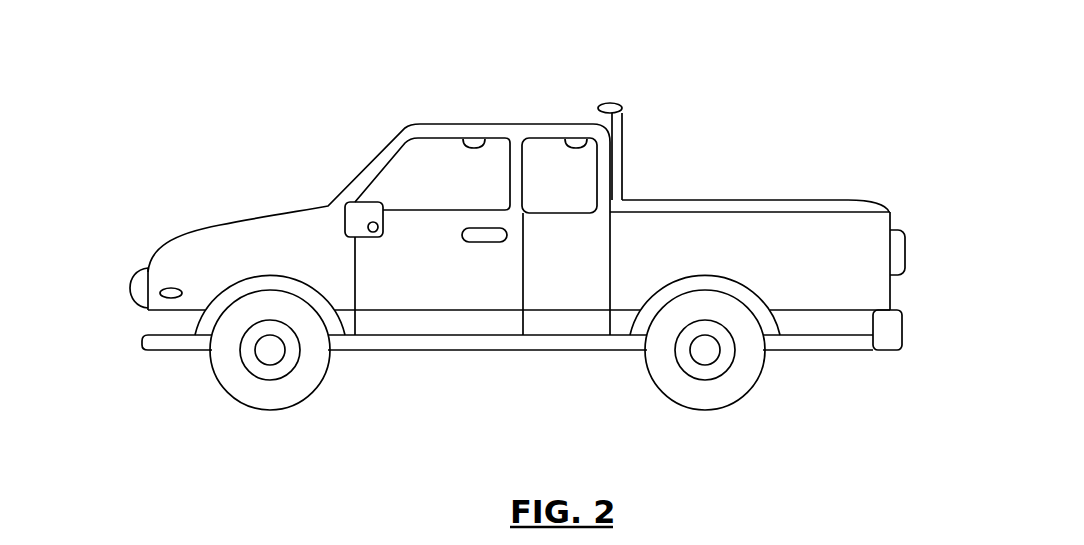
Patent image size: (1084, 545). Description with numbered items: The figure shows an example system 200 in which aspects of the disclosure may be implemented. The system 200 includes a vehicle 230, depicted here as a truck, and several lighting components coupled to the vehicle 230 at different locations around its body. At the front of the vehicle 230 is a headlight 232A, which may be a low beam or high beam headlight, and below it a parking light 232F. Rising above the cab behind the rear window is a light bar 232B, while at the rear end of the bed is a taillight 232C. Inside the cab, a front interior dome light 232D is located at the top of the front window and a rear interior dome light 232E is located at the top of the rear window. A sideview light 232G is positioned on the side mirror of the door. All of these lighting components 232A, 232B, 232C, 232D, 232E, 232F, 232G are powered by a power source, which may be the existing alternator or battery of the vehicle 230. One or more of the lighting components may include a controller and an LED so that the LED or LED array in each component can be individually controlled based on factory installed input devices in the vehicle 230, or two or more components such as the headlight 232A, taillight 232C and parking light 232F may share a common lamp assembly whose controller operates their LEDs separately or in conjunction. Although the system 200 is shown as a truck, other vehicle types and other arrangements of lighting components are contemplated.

The system 200 is at (388, 60).
The vehicle 230 is at (295, 211).
The headlight 232A is at (132, 282).
The light bar 232B is at (614, 102).
The taillight 232C is at (906, 250).
The front interior dome light 232D is at (465, 148).
The rear interior dome light 232E is at (567, 146).
The parking light 232F is at (173, 288).
The sideview light 232G is at (377, 228).